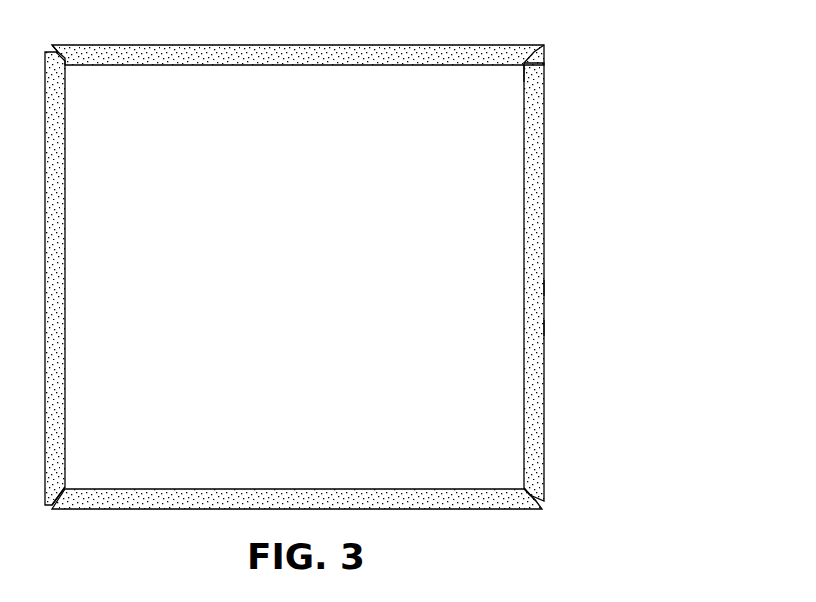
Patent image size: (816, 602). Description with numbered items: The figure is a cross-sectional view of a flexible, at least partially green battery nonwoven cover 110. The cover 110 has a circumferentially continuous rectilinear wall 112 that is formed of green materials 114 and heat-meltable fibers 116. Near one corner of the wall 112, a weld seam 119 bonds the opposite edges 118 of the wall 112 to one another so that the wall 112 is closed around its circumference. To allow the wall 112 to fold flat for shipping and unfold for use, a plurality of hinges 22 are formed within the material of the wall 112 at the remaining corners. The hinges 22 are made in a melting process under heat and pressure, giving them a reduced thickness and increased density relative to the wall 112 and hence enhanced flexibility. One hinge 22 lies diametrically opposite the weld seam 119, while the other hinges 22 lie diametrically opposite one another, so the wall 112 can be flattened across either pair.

The hinge 22 is at (83, 84).
The cover 110 is at (362, 277).
The wall 112 is at (544, 250).
The green materials 114 is at (544, 288).
The heat-meltable fibers 116 is at (544, 328).
The opposite edges 118 is at (520, 55).
The weld seam 119 is at (525, 80).